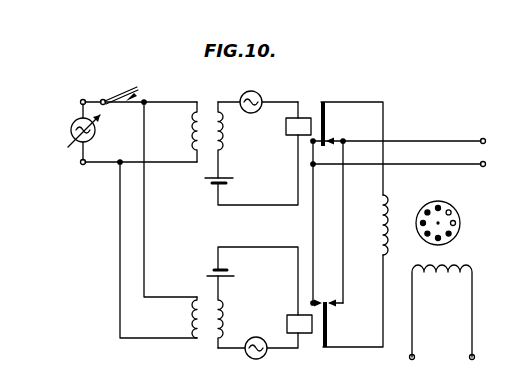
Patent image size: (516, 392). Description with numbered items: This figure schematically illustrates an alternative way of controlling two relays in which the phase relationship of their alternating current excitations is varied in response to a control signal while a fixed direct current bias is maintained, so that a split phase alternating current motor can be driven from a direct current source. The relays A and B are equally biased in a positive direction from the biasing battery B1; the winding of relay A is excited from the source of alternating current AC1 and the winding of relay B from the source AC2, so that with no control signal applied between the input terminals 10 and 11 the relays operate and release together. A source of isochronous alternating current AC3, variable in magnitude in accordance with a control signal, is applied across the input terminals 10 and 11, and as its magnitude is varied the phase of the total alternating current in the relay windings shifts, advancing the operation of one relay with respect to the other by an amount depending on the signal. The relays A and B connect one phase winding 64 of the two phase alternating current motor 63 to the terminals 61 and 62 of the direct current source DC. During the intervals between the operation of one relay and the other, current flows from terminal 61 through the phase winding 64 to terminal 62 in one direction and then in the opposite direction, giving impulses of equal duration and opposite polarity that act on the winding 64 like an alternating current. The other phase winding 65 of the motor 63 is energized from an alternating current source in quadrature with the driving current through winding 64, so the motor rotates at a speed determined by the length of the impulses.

The input terminal 10 is at (80, 100).
The input terminal 11 is at (81, 165).
The direct current source terminal 61 is at (492, 133).
The direct current source terminal 62 is at (482, 167).
The two phase alternating current motor 63 is at (460, 223).
The phase winding 64 is at (382, 230).
The phase winding 65 is at (441, 274).
The source of alternating current AC1 is at (266, 92).
The source of alternating current AC2 is at (261, 337).
The source of isochronous alternating current AC3 is at (97, 131).
The biasing battery B1 is at (204, 178).
The relay A is at (301, 116).
The relay B is at (293, 314).
The direct current source DC is at (463, 154).